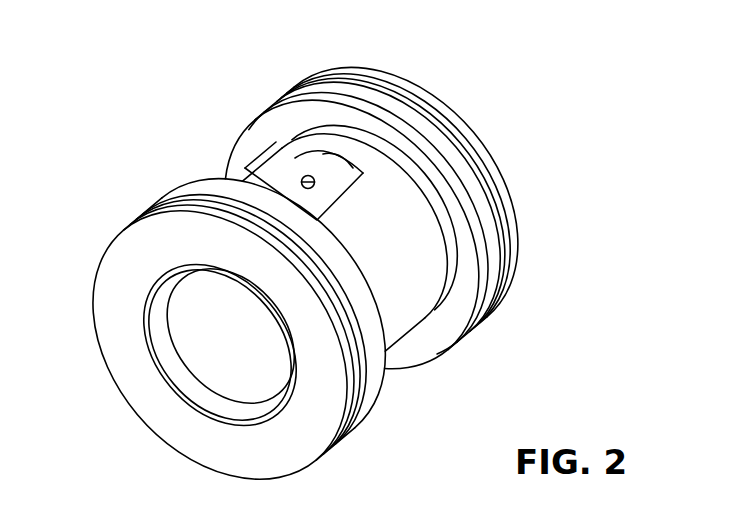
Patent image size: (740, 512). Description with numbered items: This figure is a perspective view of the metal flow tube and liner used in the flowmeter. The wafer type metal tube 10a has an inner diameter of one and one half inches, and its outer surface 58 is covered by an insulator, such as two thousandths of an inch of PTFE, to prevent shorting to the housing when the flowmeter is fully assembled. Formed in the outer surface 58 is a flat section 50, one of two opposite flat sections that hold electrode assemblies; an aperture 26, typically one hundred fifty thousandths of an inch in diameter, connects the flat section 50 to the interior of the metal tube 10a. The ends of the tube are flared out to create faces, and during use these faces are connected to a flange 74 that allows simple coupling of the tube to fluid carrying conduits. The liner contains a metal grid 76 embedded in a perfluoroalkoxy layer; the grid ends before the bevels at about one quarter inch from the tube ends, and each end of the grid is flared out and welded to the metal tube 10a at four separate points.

The wafer type metal tube 10a is at (150, 139).
The aperture 26 is at (306, 176).
The flat section 50 is at (278, 180).
The outer surface 58 is at (398, 308).
The flange 74 is at (128, 278).
The metal grid 76 is at (338, 74).